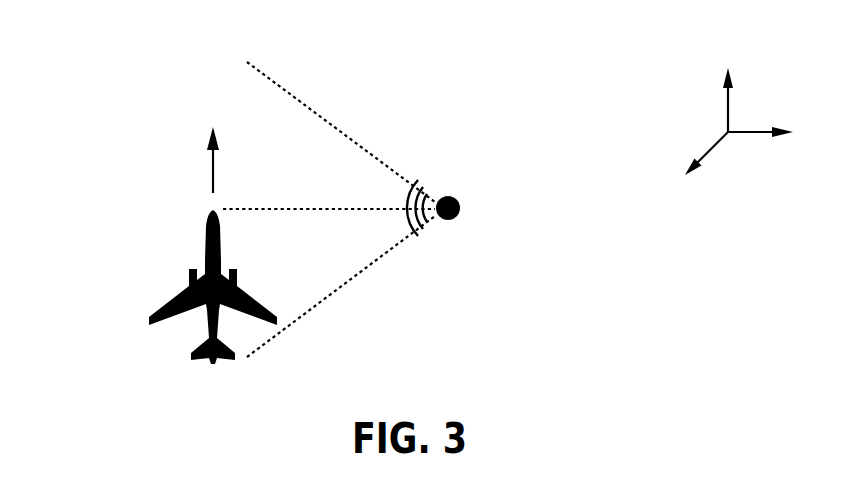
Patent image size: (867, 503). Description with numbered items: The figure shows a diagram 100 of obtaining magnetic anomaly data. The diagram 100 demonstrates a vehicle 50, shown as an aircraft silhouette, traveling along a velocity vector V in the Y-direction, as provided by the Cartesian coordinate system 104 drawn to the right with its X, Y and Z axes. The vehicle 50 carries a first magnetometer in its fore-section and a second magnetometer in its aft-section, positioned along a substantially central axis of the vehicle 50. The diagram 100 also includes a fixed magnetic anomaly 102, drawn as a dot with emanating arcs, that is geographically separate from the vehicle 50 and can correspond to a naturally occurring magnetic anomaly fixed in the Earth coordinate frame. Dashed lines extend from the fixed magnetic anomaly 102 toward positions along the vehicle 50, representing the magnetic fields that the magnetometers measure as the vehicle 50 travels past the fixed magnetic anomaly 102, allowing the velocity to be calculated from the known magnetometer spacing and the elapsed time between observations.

The diagram 100 is at (106, 41).
The vehicle 50 is at (168, 303).
The fixed magnetic anomaly 102 is at (453, 194).
The Cartesian coordinate system 104 is at (675, 90).